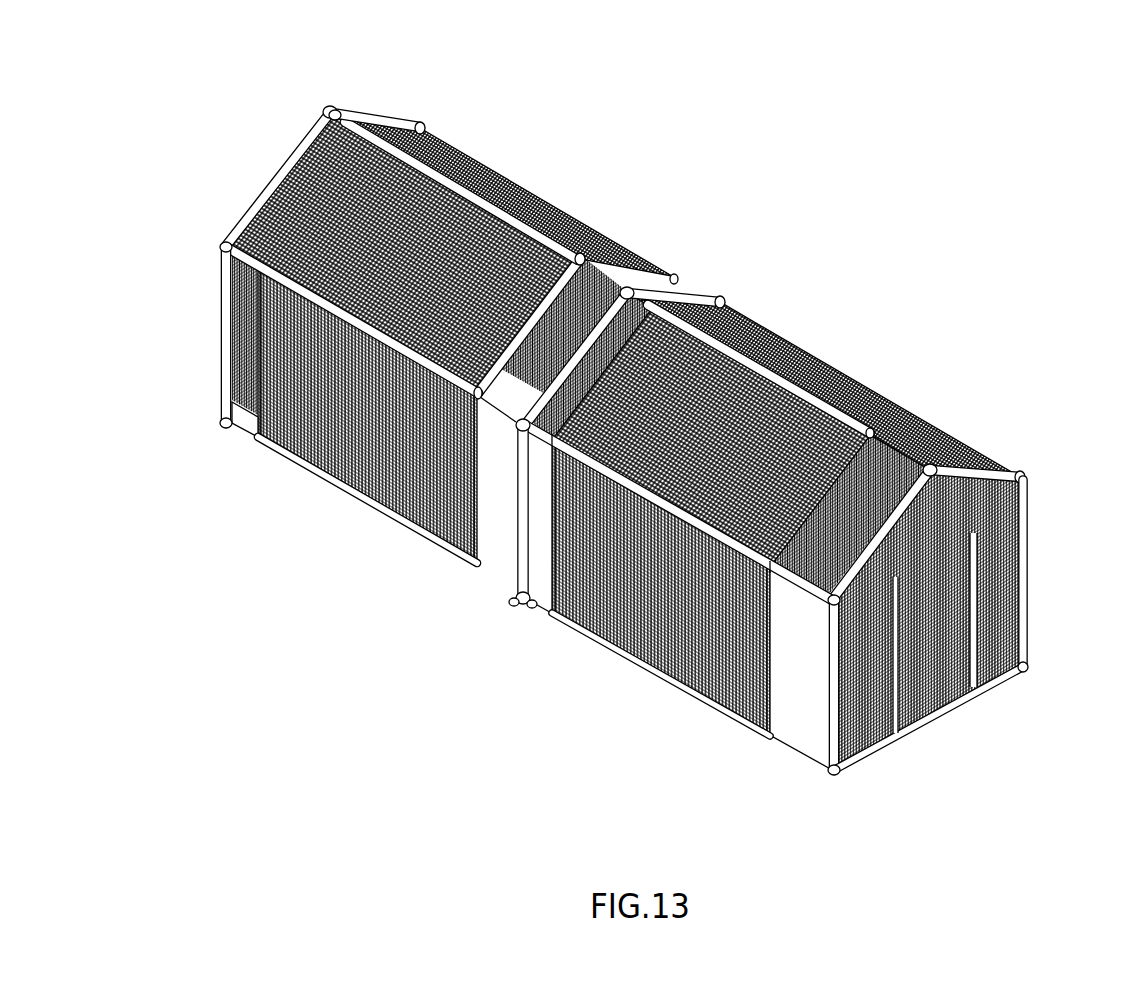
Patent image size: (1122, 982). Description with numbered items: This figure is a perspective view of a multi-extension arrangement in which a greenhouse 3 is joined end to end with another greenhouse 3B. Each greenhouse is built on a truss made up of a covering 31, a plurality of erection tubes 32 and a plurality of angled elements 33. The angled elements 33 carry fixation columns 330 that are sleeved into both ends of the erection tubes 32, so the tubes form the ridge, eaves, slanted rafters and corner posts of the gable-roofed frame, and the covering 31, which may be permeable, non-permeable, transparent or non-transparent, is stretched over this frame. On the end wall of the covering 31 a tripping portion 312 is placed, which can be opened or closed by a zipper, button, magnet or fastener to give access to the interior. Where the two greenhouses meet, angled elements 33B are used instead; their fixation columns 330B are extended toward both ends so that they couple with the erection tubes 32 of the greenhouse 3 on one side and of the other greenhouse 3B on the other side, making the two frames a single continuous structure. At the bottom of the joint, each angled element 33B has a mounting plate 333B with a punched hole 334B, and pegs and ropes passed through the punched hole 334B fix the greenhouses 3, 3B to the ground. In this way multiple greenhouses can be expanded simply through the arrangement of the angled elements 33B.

The greenhouse 3 is at (602, 294).
The another greenhouse 3B is at (716, 464).
The covering 31 is at (298, 145).
The erection tubes 32 is at (263, 198).
The angled elements 33 is at (318, 100).
The fixation columns 330 is at (331, 106).
The angled elements 33B is at (660, 259).
The fixation columns 330B is at (700, 291).
The tripping portion 312 is at (978, 555).
The mounting plate 333B is at (518, 603).
The punched hole 334B is at (512, 607).